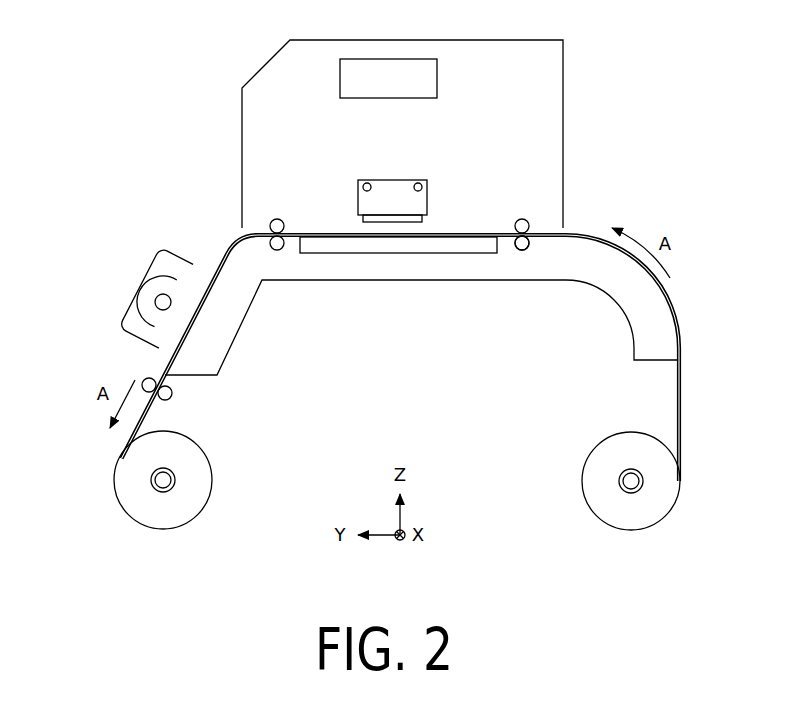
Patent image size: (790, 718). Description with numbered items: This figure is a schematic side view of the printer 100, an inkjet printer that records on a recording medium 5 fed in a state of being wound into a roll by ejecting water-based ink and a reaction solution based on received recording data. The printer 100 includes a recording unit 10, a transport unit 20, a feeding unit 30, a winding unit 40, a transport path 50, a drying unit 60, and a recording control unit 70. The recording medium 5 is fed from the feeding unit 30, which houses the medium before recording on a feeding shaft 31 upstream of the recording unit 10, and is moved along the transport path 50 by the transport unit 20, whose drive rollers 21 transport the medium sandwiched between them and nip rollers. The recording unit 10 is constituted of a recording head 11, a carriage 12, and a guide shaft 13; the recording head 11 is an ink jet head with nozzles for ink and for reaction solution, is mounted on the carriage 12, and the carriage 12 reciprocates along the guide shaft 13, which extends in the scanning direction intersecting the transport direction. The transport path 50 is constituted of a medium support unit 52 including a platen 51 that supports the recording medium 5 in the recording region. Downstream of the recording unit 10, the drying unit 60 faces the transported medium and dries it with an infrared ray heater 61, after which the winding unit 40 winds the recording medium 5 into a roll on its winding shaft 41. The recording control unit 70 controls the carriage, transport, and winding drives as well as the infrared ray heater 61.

The printer 100 is at (665, 119).
The recording unit 10 is at (401, 167).
The recording head 11 is at (390, 218).
The carriage 12 is at (387, 190).
The guide shaft 13 is at (364, 185).
The transport unit 20 is at (530, 208).
The drive rollers 21 is at (522, 251).
The recording medium 5 is at (226, 246).
The transport path 50 is at (421, 312).
The platen 51 is at (382, 248).
The medium support unit 52 is at (275, 268).
The drying unit 60 is at (111, 282).
The infrared ray heater 61 is at (152, 297).
The recording control unit 70 is at (437, 80).
The feeding unit 30 is at (619, 481).
The feeding shaft 31 is at (643, 483).
The winding unit 40 is at (118, 492).
The winding shaft 41 is at (160, 493).